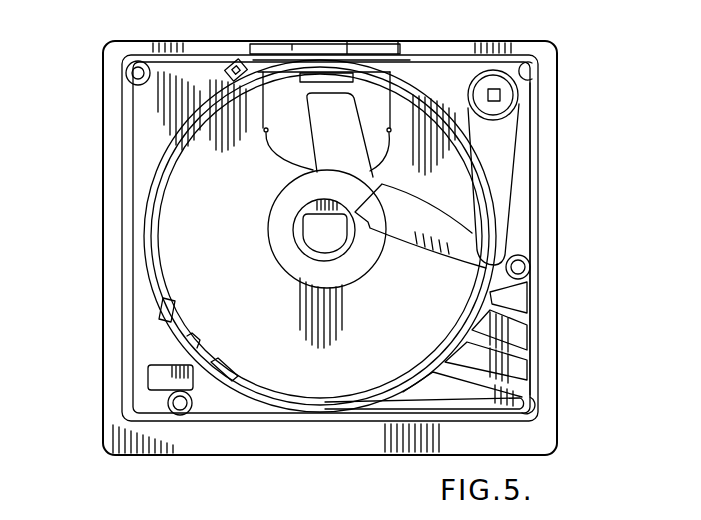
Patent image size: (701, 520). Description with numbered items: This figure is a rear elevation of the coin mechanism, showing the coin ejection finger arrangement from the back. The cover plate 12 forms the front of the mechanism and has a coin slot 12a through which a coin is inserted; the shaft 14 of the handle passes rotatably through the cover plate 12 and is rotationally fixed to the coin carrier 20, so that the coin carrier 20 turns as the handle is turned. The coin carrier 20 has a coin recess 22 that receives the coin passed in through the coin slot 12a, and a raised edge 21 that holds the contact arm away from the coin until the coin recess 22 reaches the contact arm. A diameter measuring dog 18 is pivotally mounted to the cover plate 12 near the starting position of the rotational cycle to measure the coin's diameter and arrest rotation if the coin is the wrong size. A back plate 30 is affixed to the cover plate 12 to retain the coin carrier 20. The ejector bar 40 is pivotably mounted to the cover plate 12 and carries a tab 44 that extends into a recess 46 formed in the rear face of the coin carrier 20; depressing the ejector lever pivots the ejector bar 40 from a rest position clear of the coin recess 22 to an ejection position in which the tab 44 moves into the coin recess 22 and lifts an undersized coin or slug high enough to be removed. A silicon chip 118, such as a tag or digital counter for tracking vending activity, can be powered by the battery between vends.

The cover plate 12 is at (556, 208).
The coin slot 12a is at (293, 47).
The shaft 14 is at (312, 250).
The diameter measuring dog 18 is at (232, 62).
The coin carrier 20 is at (197, 284).
The raised edge 21 is at (183, 172).
The coin recess 22 is at (367, 92).
The back plate 30 is at (143, 123).
The ejector bar 40 is at (487, 214).
The tab 44 is at (373, 236).
The recess 46 is at (292, 222).
The silicon chip 118 is at (155, 377).